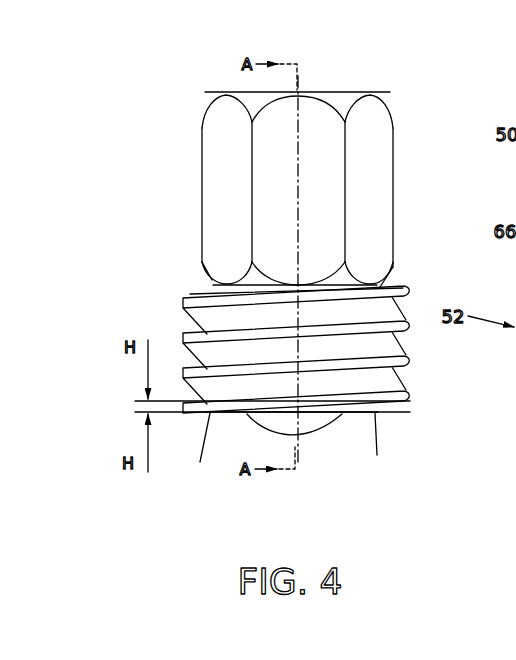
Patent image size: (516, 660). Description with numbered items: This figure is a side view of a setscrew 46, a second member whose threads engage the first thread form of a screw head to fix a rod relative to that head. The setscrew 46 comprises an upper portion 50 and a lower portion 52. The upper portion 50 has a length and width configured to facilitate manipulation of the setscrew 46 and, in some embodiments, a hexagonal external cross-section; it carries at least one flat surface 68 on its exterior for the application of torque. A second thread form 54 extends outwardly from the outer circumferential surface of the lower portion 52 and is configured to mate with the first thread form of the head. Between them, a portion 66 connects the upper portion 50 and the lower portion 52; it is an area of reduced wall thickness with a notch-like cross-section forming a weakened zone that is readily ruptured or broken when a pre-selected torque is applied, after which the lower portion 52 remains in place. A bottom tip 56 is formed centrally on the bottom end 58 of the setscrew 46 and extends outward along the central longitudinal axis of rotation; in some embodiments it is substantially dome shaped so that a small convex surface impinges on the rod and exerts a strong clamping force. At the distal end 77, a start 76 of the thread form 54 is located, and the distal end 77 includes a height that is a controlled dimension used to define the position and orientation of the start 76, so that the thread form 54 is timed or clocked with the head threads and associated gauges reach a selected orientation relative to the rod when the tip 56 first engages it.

The setscrew 46 is at (160, 203).
The upper portion 50 is at (410, 190).
The flat surface 68 is at (221, 182).
The portion 66 is at (383, 288).
The lower portion 52 is at (153, 328).
The second thread form 54 is at (207, 333).
The bottom tip 56 is at (300, 440).
The bottom end 58 is at (377, 455).
The distal end 77 is at (200, 462).
The start 76 is at (282, 416).